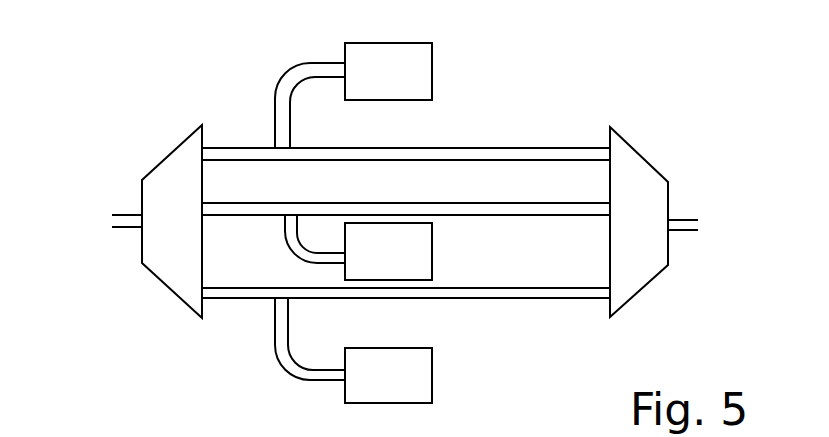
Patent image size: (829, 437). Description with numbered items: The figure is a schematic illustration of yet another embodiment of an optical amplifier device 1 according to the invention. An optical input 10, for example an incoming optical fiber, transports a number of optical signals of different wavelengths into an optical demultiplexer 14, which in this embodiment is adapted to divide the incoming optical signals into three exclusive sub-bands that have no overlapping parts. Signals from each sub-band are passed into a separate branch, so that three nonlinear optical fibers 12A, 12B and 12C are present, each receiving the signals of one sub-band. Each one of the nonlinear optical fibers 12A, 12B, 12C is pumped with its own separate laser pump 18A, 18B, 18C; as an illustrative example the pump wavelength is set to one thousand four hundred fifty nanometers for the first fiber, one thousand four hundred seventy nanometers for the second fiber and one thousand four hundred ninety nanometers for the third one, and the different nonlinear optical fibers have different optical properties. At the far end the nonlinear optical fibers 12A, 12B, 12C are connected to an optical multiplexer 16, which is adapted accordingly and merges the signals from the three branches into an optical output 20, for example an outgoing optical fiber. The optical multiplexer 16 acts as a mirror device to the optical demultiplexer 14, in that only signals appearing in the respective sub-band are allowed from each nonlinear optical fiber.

The optical amplifier device 1 is at (196, 92).
The optical input 10 is at (125, 215).
The nonlinear optical fiber 12A is at (566, 153).
The nonlinear optical fiber 12B is at (497, 208).
The nonlinear optical fiber 12C is at (565, 298).
The optical demultiplexer 14 is at (182, 287).
The optical multiplexer 16 is at (637, 287).
The laser pump 18A is at (427, 59).
The laser pump 18B is at (427, 262).
The laser pump 18C is at (427, 390).
The optical output 20 is at (687, 221).